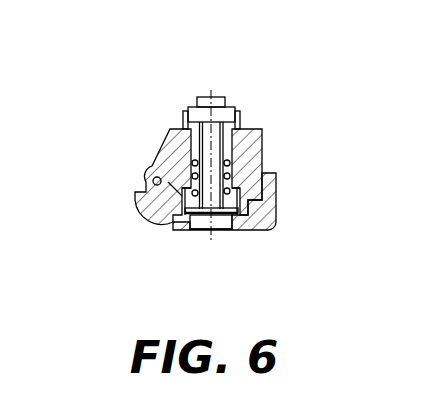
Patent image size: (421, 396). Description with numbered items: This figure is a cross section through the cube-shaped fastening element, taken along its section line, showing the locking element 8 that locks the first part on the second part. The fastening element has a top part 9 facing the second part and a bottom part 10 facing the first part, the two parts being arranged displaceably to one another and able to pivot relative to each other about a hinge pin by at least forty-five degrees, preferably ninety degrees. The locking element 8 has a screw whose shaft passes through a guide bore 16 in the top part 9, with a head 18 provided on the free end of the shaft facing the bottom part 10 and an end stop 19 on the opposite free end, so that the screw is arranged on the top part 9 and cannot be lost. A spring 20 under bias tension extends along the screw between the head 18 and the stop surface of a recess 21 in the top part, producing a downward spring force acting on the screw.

The locking element 8 is at (248, 110).
The top part 9 is at (263, 168).
The bottom part 10 is at (153, 224).
The guide bore 16 is at (248, 139).
The head 18 is at (203, 229).
The end stop 19 is at (199, 108).
The spring 20 is at (231, 198).
The recess 21 is at (200, 144).